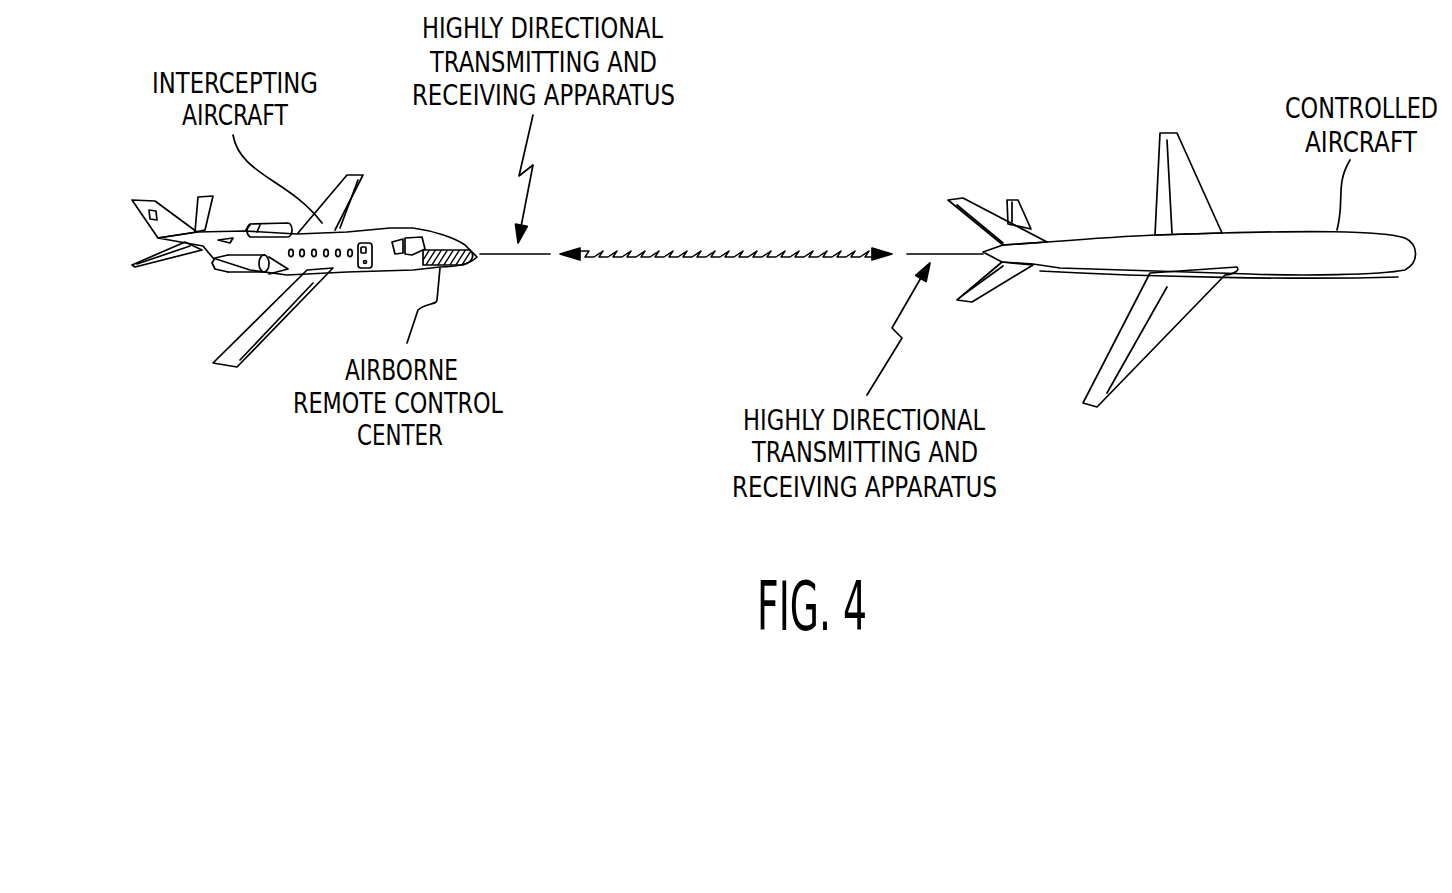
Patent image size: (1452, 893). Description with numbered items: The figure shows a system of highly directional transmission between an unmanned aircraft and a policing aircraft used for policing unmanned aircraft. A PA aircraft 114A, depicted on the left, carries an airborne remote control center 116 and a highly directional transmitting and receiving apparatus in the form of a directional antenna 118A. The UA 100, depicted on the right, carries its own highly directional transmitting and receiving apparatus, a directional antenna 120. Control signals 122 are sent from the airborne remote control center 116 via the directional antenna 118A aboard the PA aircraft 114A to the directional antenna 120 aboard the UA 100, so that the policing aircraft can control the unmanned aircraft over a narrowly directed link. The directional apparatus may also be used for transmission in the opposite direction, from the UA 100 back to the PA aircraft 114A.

The UA 100 is at (1283, 267).
The PA aircraft 114A is at (242, 272).
The airborne remote control center 116 is at (457, 270).
The directional antenna 118A is at (533, 254).
The directional antenna 120 is at (918, 253).
The control signals 122 is at (672, 258).